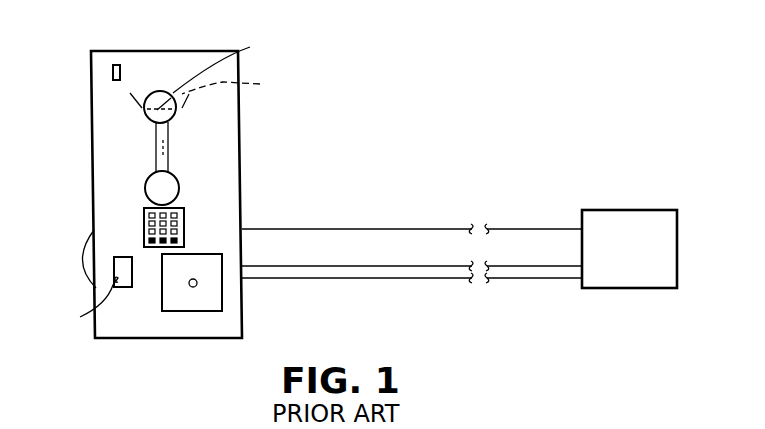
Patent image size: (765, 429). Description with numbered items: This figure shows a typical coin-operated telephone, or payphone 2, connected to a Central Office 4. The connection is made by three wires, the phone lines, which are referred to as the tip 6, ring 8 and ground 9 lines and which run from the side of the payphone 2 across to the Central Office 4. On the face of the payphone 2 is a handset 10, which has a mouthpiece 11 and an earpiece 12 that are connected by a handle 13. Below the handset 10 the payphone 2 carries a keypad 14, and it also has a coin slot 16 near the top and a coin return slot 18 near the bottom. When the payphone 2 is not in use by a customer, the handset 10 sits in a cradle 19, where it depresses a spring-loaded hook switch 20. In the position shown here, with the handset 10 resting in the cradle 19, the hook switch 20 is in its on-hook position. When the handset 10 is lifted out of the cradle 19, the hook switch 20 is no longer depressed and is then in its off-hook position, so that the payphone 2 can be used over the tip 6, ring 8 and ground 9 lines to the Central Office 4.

The payphone 2 is at (188, 51).
The central office 4 is at (625, 210).
The tip line 6 is at (341, 229).
The ring line 8 is at (364, 266).
The ground line 9 is at (333, 279).
The handset 10 is at (231, 62).
The mouthpiece 11 is at (145, 190).
The earpiece 12 is at (157, 95).
The handle 13 is at (155, 143).
The keypad 14 is at (182, 213).
The coin slot 16 is at (113, 73).
The coin return slot 18 is at (89, 282).
The cradle 19 is at (131, 95).
The hook switch 20 is at (236, 84).